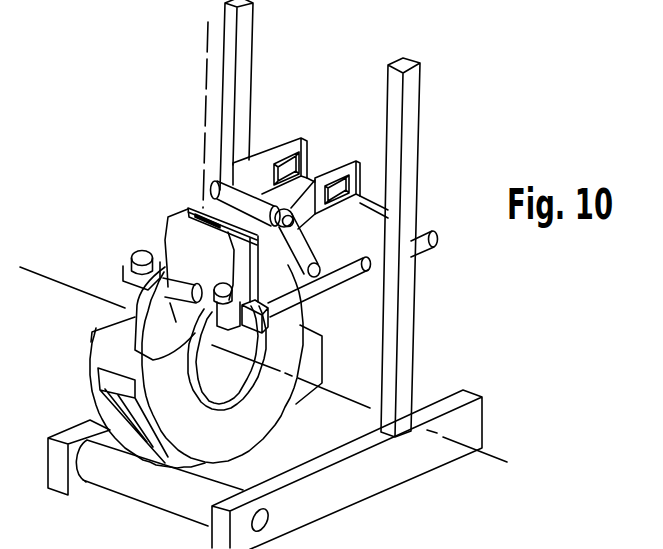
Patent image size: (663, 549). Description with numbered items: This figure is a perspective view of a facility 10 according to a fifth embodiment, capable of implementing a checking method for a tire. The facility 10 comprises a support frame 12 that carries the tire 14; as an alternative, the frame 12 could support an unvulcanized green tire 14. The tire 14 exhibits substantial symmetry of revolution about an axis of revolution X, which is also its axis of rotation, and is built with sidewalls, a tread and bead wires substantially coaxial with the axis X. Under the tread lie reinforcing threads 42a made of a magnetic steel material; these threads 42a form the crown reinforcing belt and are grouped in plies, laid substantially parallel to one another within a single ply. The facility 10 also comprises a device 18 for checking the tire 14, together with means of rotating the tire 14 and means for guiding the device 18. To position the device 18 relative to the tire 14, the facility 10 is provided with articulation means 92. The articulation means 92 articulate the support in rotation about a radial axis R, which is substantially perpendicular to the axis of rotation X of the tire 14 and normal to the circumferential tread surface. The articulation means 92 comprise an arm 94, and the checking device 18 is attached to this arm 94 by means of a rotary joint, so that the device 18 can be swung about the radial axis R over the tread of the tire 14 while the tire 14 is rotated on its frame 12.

The facility 10 is at (453, 161).
The support frame 12 is at (398, 462).
The tire 14 is at (110, 352).
The checking device 18 is at (136, 222).
The reinforcing threads 42a is at (108, 399).
The articulation means 92 is at (185, 190).
The arm 94 is at (300, 308).
The radial axis R is at (206, 40).
The axis of revolution X is at (34, 267).